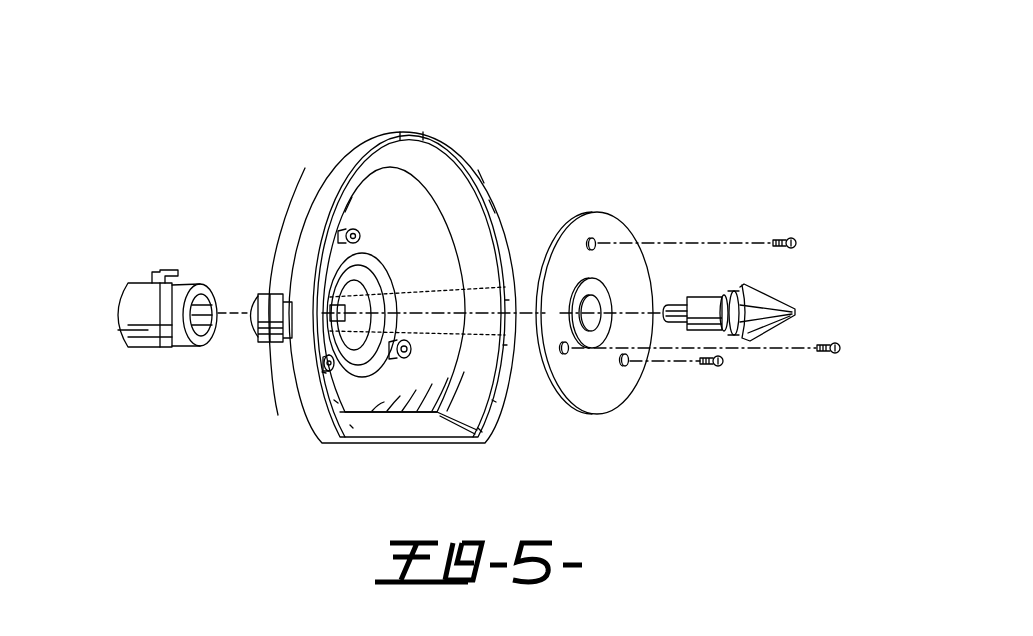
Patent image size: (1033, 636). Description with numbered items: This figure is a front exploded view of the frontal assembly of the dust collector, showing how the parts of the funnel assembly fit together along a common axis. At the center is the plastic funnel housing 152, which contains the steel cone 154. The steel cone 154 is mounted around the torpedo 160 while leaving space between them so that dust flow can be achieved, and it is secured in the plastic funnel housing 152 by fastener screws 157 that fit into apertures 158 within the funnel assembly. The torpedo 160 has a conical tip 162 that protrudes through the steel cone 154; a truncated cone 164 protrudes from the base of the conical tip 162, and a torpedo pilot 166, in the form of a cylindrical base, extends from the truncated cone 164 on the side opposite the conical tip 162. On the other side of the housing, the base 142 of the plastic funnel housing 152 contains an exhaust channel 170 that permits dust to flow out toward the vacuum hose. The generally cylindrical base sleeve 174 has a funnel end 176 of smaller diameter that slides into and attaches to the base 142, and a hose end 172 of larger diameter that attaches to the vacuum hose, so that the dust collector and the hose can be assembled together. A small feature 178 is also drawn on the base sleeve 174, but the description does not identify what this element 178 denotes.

The base 142 is at (252, 338).
The plastic funnel housing 152 is at (462, 148).
The steel cone 154 is at (605, 387).
The fastener screws 157 is at (794, 238).
The apertures 158 is at (410, 351).
The torpedo 160 is at (758, 281).
The conical tip 162 is at (763, 333).
The truncated cone 164 is at (722, 292).
The torpedo pilot 166 is at (671, 320).
The exhaust channel 170 is at (278, 415).
The hose end 172 is at (112, 302).
The base sleeve 174 is at (143, 337).
The funnel end 176 is at (193, 290).
The tab 178 is at (168, 270).